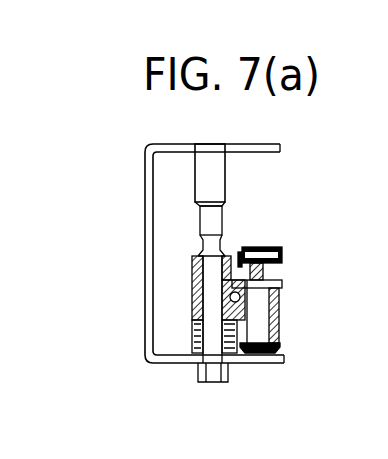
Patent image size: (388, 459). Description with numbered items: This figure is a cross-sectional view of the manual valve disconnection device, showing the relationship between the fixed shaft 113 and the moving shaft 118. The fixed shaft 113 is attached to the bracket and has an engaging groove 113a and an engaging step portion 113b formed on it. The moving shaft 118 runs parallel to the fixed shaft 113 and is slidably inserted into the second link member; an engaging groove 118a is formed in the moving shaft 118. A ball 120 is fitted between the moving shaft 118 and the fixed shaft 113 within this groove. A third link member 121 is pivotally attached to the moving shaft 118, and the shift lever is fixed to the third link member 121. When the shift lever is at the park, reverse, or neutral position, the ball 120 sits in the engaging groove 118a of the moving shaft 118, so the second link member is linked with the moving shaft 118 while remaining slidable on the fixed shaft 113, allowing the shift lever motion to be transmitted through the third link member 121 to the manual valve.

The fixed shaft 113 is at (207, 153).
The engaging groove 113a is at (190, 205).
The engaging step portion 113b is at (190, 243).
The ball 120 is at (200, 298).
The third link member 121 is at (282, 255).
The engaging groove 118a is at (248, 301).
The moving shaft 118 is at (263, 335).